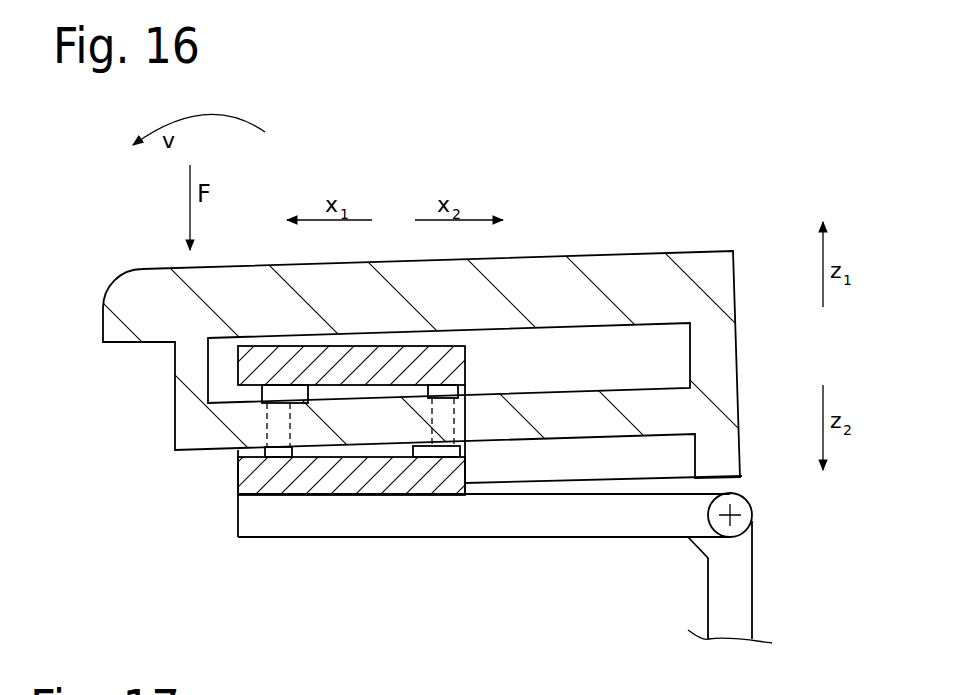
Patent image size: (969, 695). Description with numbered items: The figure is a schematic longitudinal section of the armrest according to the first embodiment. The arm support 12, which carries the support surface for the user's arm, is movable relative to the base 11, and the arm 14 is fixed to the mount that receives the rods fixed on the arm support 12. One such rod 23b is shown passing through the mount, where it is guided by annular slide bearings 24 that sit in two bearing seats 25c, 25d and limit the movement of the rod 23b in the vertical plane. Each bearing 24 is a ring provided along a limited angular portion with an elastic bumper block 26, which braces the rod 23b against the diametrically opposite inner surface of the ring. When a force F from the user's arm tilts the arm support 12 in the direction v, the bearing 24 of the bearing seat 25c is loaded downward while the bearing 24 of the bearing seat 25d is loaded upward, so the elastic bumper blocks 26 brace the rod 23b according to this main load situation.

The base 11 is at (732, 593).
The arm support 12 is at (599, 244).
The arm 14 is at (612, 515).
The rod 23b is at (543, 413).
The bearing 24 is at (283, 450).
The bearing seat 25c is at (257, 455).
The bearing seat 25d is at (437, 474).
The elastic bumper block 26 is at (300, 393).